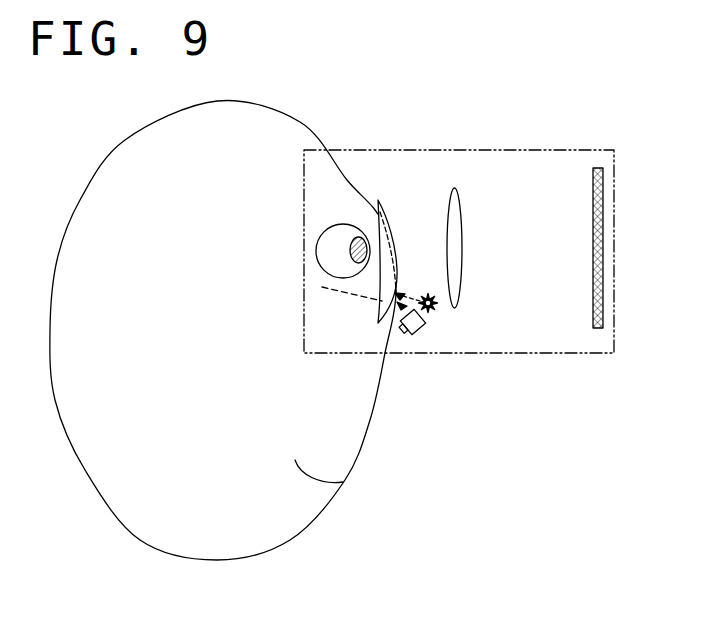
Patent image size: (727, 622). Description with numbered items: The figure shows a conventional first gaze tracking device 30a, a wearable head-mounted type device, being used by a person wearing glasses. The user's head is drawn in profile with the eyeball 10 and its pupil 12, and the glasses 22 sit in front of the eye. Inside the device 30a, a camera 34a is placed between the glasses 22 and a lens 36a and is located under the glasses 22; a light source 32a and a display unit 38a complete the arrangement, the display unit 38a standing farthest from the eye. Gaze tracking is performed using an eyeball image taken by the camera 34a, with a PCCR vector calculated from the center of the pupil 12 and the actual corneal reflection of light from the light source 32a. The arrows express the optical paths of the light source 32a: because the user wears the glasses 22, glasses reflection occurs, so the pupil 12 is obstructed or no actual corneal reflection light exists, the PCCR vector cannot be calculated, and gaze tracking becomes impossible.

The eyeball 10 is at (317, 262).
The pupil 12 is at (351, 243).
The glasses 22 is at (388, 199).
The first gaze tracking device 30a is at (497, 150).
The light source 32a is at (433, 308).
The camera 34a is at (412, 333).
The lens 36a is at (457, 188).
The display unit 38a is at (603, 197).